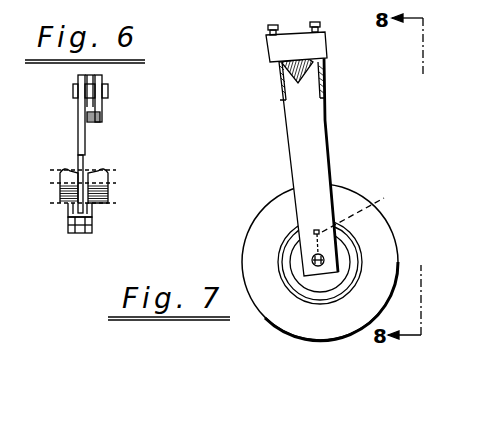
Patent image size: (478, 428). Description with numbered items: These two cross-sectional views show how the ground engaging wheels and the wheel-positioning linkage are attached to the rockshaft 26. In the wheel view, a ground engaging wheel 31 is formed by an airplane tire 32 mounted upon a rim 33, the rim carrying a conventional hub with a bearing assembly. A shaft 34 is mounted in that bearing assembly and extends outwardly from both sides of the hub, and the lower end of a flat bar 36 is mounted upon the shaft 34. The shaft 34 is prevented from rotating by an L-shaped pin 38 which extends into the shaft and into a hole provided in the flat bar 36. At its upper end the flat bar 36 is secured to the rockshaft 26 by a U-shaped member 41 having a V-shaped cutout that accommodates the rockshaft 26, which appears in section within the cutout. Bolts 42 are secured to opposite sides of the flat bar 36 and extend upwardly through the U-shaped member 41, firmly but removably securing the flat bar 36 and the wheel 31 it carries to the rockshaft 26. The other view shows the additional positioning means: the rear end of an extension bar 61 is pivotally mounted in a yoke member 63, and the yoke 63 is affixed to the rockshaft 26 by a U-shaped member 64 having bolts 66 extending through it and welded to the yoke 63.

In FIG. 6, the rockshaft 26 is at (97, 173).
In FIG. 7, the rockshaft 26 is at (285, 68).
In FIG. 7, the ground engaging wheel 31 is at (394, 231).
In FIG. 7, the airplane tire 32 is at (368, 309).
In FIG. 7, the rim 33 is at (316, 296).
In FIG. 7, the shaft 34 is at (312, 259).
In FIG. 7, the flat bar 36 is at (318, 137).
In FIG. 7, the L-shaped pin 38 is at (361, 224).
In FIG. 7, the U-shaped member 41 is at (273, 49).
In FIG. 7, the bolt 42 is at (277, 90).
In FIG. 6, the extension bar 61 is at (87, 88).
In FIG. 6, the yoke member 63 is at (82, 143).
In FIG. 6, the U-shaped member 64 is at (92, 210).
In FIG. 6, the bolt 66 is at (78, 160).